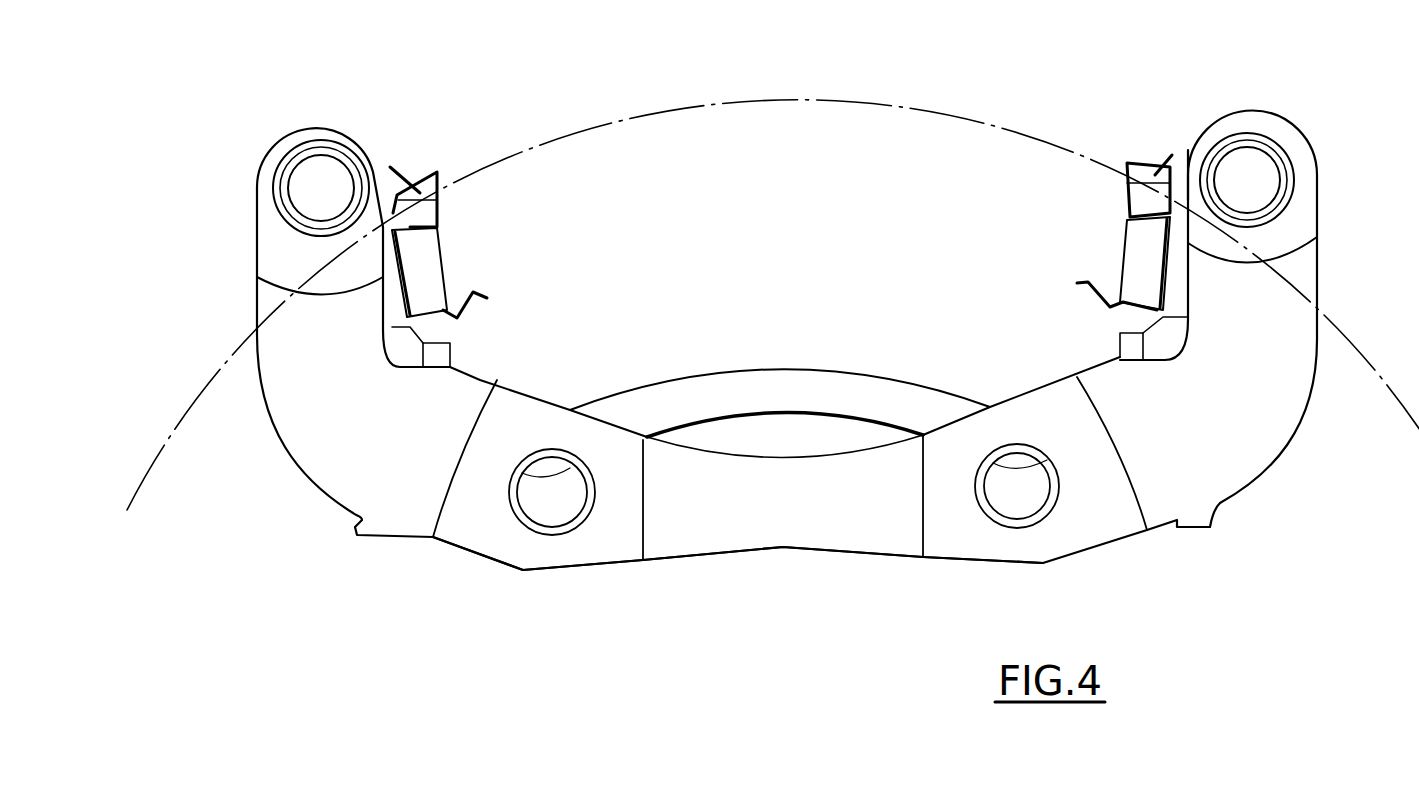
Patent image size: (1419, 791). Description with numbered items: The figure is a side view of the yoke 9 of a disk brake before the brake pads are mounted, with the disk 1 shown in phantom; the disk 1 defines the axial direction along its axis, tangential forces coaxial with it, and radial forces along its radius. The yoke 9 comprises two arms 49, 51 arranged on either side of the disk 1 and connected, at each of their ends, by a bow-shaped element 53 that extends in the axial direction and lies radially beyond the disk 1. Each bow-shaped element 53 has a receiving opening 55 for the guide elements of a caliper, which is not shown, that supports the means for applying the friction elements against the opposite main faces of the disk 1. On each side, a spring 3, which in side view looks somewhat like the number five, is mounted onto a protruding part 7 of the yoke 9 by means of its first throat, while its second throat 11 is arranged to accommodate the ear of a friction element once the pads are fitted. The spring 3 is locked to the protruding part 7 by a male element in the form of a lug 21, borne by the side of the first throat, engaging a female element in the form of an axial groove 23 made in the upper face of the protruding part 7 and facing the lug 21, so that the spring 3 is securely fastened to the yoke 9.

The disk 1 is at (873, 103).
The spring 3 is at (455, 330).
The protruding part 7 is at (1180, 165).
The yoke 9 is at (1282, 473).
The second throat 11 is at (452, 283).
The lug 21 is at (445, 216).
The axial groove 23 is at (1155, 170).
The arm 49 is at (727, 558).
The arm 51 is at (823, 370).
The bow-shaped element 53 is at (352, 128).
The receiving opening 55 is at (303, 178).